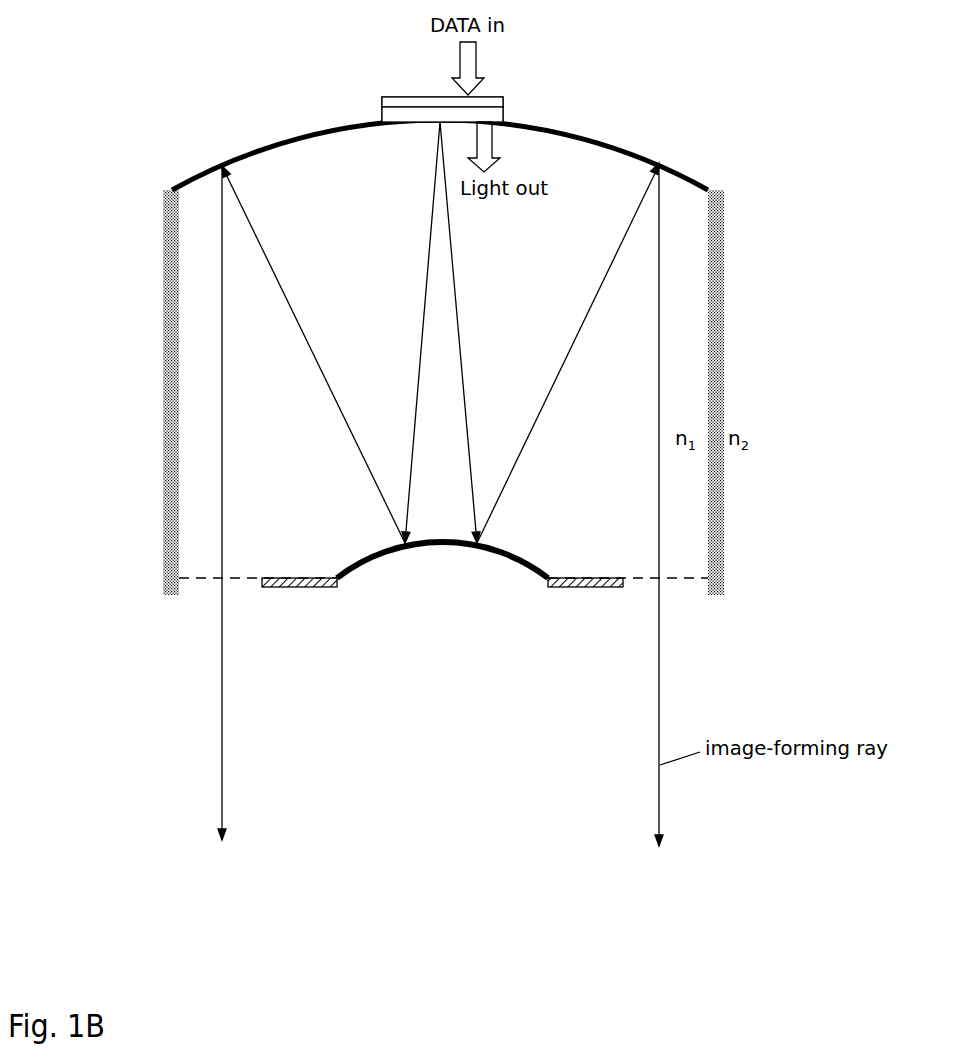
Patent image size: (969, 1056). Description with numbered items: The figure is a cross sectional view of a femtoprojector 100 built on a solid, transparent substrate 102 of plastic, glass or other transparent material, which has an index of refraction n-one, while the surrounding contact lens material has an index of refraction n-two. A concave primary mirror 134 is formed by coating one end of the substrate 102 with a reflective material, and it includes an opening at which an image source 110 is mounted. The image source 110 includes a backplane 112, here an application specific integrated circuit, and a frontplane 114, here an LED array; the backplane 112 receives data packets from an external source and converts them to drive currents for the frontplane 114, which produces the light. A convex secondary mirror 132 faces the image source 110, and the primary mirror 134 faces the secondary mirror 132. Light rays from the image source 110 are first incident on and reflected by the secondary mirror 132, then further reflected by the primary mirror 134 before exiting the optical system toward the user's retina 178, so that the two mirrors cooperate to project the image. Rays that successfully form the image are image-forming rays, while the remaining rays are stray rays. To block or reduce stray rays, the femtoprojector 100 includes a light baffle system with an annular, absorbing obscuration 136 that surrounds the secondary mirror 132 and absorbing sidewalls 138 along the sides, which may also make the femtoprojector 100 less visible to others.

The femtoprojector 100 is at (103, 41).
The solid transparent substrate 102 is at (352, 218).
The image source 110 is at (520, 65).
The backplane 112 is at (503, 102).
The frontplane 114 is at (503, 109).
The secondary mirror 132 is at (360, 567).
The primary mirror 134 is at (260, 148).
The obscuration 136 is at (292, 587).
The absorbing sidewalls 138 is at (165, 450).
The retina 178 is at (442, 825).